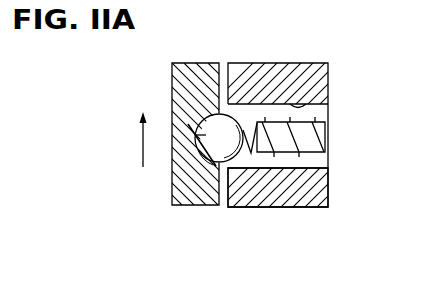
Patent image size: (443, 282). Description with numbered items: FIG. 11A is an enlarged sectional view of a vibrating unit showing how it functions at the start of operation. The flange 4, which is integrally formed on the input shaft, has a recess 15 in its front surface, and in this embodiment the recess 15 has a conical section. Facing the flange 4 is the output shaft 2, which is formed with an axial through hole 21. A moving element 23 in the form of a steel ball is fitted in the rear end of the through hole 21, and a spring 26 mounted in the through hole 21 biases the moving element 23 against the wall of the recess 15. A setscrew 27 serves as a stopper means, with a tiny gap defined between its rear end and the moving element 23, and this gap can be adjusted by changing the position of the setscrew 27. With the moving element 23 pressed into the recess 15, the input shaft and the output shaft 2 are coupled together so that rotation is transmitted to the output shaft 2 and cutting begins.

The output shaft 2 is at (277, 77).
The flange 4 is at (192, 63).
The recess 15 is at (204, 162).
The through hole 21 is at (305, 106).
The moving element 23 is at (200, 127).
The spring 26 is at (278, 156).
The setscrew 27 is at (318, 174).